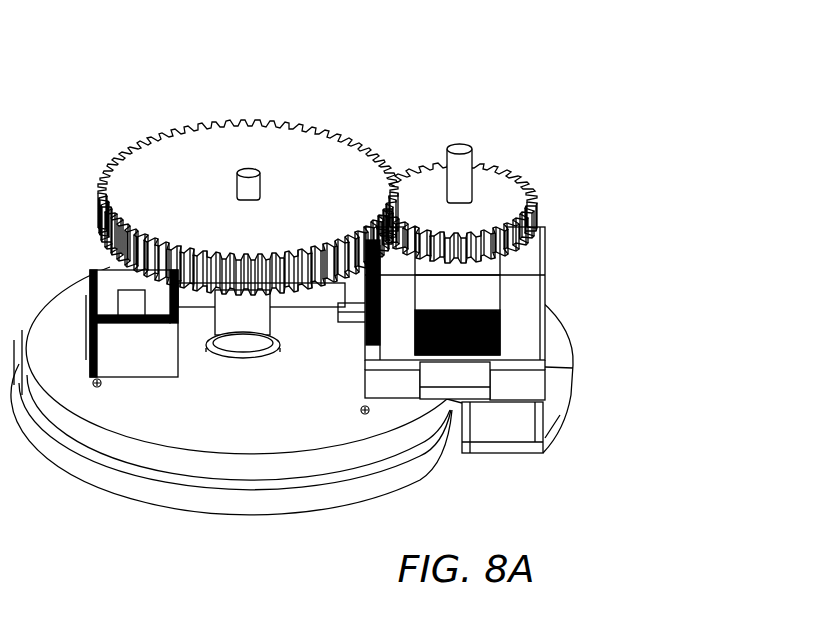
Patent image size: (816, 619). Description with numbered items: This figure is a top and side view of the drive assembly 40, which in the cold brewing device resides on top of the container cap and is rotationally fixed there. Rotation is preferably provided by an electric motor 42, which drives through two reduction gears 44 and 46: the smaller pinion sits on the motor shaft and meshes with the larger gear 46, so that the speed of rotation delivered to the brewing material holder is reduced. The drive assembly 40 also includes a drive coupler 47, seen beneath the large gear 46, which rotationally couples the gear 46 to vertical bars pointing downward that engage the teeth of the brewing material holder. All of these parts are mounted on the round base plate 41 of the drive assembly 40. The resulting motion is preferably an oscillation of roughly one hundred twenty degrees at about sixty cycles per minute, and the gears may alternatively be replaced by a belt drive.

The drive assembly 40 is at (392, 264).
The base plate 41 is at (252, 413).
The electric motor 42 is at (518, 323).
The reduction gear 44 is at (493, 193).
The reduction gear 46 is at (195, 167).
The drive coupler 47 is at (248, 317).